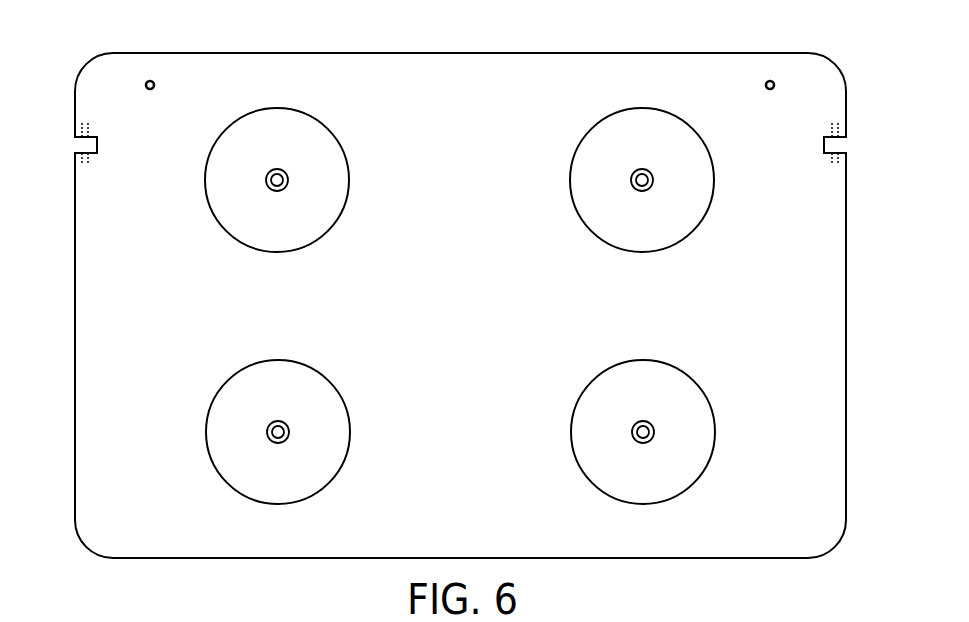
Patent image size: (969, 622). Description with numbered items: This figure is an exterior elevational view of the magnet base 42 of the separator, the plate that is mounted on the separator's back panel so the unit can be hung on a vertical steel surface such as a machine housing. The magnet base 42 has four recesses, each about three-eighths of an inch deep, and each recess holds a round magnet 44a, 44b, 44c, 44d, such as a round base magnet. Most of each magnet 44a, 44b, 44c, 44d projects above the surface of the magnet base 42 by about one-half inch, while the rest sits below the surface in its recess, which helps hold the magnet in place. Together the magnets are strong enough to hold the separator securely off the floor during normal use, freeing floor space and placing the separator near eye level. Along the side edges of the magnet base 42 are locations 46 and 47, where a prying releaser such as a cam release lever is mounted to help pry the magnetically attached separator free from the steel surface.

The magnet base 42 is at (520, 62).
The round magnet 44a is at (294, 120).
The round magnet 44b is at (660, 120).
The round magnet 44c is at (661, 374).
The round magnet 44d is at (294, 374).
The location 46 is at (78, 146).
The location 47 is at (843, 146).